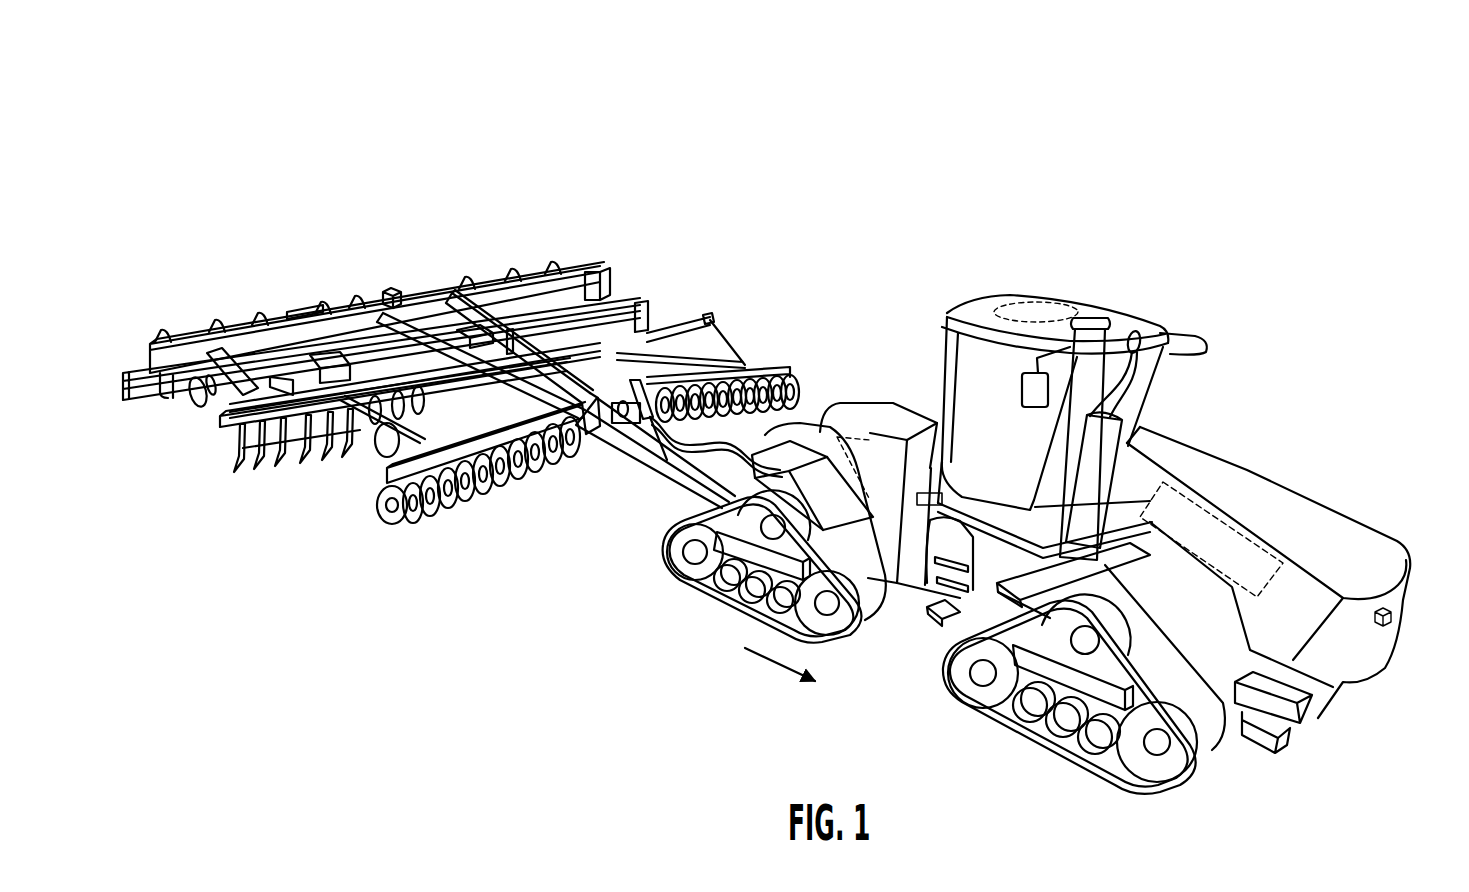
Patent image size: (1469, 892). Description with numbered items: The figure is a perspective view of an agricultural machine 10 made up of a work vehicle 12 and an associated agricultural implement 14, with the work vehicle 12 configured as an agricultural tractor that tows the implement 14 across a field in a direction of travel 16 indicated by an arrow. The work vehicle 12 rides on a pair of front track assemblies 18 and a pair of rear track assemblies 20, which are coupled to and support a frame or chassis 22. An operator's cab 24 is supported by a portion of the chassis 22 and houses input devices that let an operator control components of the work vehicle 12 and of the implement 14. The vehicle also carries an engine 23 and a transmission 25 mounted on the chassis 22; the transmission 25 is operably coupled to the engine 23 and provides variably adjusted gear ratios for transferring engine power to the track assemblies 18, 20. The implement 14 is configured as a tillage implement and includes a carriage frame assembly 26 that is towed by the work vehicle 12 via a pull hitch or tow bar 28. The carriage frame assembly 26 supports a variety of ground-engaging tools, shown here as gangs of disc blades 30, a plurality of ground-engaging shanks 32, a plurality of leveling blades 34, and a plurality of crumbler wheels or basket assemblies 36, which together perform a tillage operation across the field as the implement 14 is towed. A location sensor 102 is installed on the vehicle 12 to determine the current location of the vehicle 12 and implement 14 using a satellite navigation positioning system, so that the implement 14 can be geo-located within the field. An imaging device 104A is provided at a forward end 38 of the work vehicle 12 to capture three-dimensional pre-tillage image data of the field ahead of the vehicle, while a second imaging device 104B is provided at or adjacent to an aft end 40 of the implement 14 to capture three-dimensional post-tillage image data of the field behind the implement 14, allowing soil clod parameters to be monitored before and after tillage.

The agricultural machine 10 is at (247, 103).
The work vehicle 12 is at (1234, 431).
The agricultural implement 14 is at (667, 302).
The direction of travel 16 is at (767, 662).
The front track assemblies 18 is at (1013, 730).
The rear track assemblies 20 is at (707, 593).
The chassis 22 is at (977, 618).
The engine 23 is at (1257, 525).
The operator's cab 24 is at (950, 375).
The transmission 25 is at (877, 517).
The carriage frame assembly 26 is at (430, 292).
The pull hitch or tow bar 28 is at (673, 473).
The disc blades 30 is at (307, 472).
The ground-engaging shanks 32 is at (218, 411).
The leveling blades 34 is at (195, 402).
The crumbler wheels or basket assemblies 36 is at (131, 370).
The forward end 38 is at (1410, 715).
The aft end 40 is at (246, 212).
The location sensor 102 is at (1044, 293).
The imaging device 104A is at (1397, 605).
The second imaging device 104B is at (388, 290).